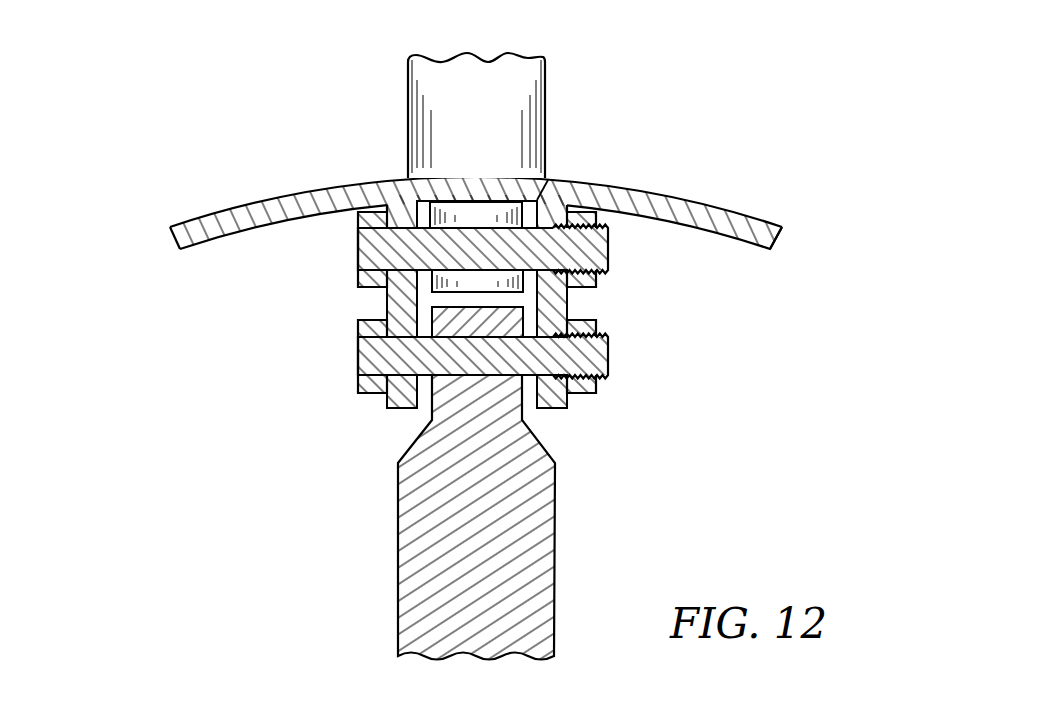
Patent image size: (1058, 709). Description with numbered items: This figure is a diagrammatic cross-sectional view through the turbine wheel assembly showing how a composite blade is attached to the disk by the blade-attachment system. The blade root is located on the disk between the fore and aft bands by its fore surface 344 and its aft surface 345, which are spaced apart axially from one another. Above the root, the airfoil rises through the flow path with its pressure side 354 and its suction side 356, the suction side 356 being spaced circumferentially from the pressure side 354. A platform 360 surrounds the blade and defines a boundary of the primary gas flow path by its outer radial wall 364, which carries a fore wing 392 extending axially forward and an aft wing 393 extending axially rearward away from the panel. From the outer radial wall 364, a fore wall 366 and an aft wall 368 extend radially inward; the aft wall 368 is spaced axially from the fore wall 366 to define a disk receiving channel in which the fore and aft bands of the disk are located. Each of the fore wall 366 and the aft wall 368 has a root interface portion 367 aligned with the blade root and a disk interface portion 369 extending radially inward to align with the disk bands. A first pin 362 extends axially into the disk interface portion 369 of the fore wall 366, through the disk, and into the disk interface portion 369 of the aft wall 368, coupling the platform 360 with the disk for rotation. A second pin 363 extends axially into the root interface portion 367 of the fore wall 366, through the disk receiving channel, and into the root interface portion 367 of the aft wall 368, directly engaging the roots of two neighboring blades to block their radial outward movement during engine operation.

The fore surface 344 is at (424, 292).
The aft surface 345 is at (523, 286).
The pressure side 354 is at (407, 88).
The suction side 356 is at (547, 83).
The platform 360 is at (766, 170).
The first pin 362 is at (357, 358).
The second pin 363 is at (358, 248).
The outer radial wall 364 is at (650, 181).
The fore wall 366 is at (276, 504).
The root interface portion 367 is at (424, 288).
The aft wall 368 is at (706, 315).
The disk interface portion 369 is at (418, 388).
The fore wing 392 is at (170, 233).
The aft wing 393 is at (782, 238).